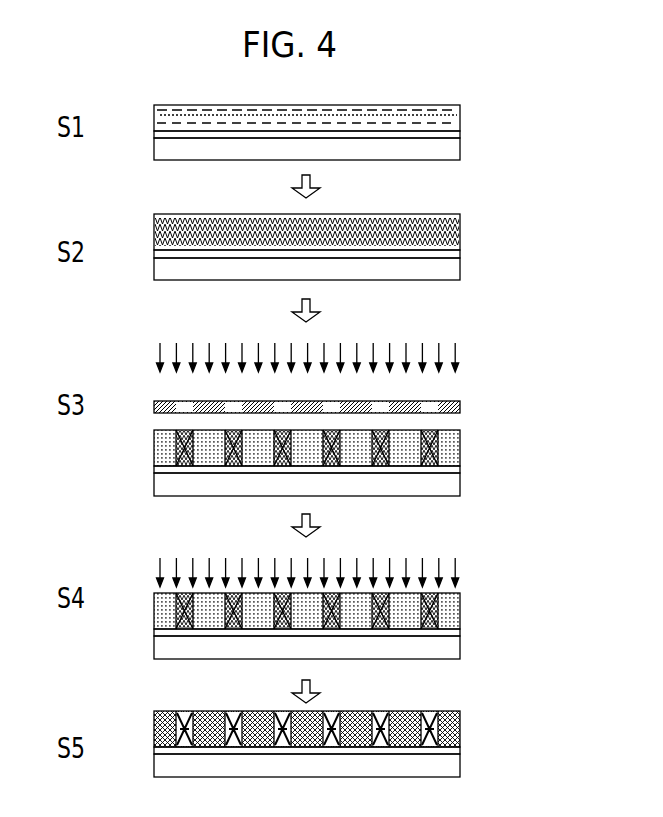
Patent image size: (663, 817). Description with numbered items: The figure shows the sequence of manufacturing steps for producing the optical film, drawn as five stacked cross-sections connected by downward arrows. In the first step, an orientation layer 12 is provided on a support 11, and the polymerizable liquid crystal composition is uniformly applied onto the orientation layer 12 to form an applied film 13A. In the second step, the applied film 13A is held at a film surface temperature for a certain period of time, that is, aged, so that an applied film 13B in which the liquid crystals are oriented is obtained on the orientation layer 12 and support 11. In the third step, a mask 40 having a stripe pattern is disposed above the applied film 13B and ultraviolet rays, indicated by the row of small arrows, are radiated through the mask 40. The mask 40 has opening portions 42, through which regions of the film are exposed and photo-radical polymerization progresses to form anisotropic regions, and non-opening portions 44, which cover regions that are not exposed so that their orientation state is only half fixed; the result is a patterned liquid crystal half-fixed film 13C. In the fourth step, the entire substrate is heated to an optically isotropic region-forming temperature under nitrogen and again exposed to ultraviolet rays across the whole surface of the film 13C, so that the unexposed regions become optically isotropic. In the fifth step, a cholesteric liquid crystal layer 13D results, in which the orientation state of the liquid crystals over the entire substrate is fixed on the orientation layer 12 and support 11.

The support 11 is at (460, 156).
The orientation layer 12 is at (460, 134).
The applied film 13A is at (460, 113).
The applied film 13B is at (460, 236).
The patterned liquid crystal half-fixed film 13C is at (460, 449).
The cholesteric liquid crystal layer 13D is at (460, 733).
The mask 40 is at (343, 400).
The opening portions 42 is at (430, 409).
The non-opening portions 44 is at (460, 401).